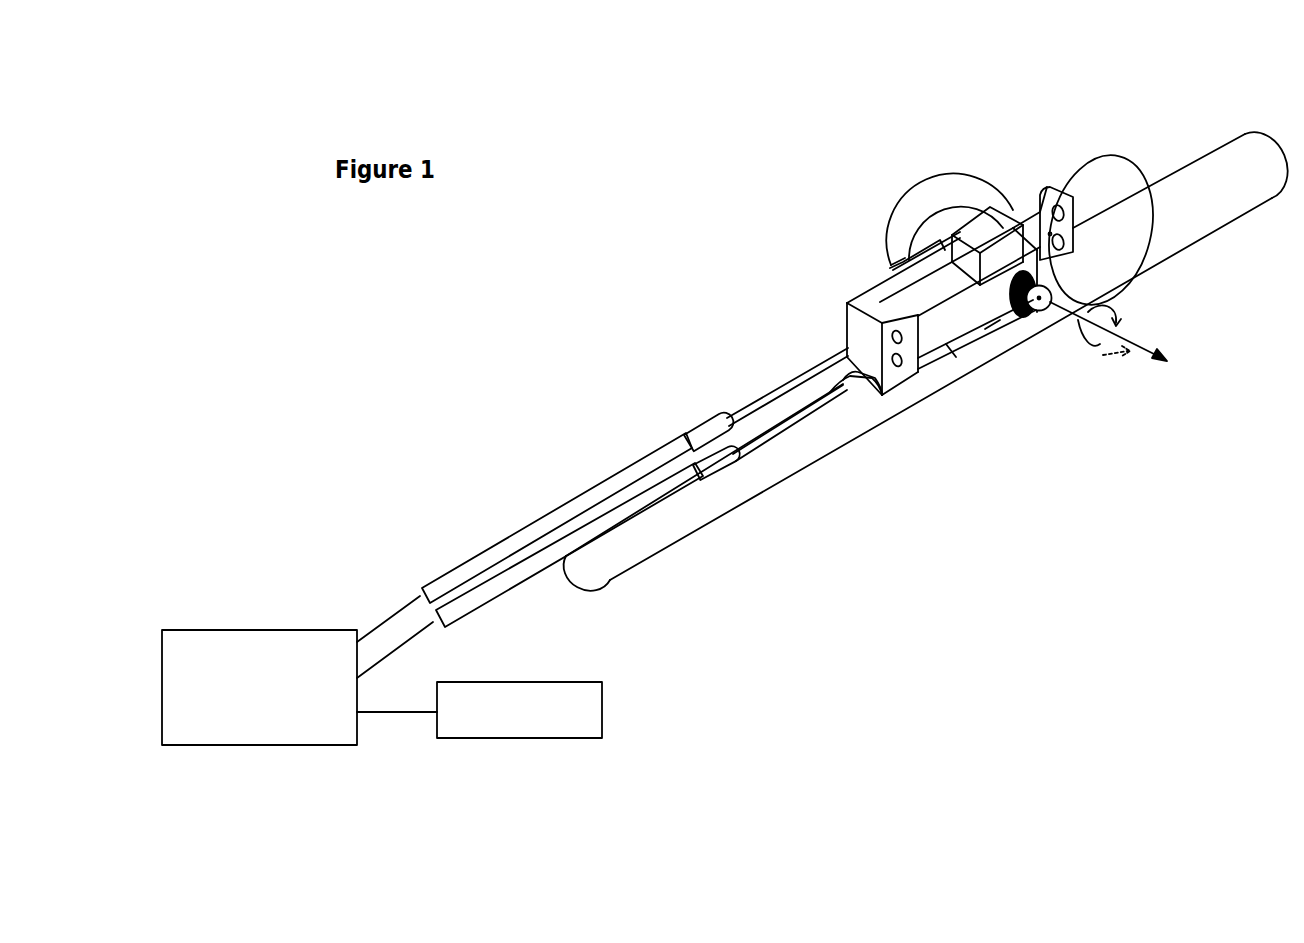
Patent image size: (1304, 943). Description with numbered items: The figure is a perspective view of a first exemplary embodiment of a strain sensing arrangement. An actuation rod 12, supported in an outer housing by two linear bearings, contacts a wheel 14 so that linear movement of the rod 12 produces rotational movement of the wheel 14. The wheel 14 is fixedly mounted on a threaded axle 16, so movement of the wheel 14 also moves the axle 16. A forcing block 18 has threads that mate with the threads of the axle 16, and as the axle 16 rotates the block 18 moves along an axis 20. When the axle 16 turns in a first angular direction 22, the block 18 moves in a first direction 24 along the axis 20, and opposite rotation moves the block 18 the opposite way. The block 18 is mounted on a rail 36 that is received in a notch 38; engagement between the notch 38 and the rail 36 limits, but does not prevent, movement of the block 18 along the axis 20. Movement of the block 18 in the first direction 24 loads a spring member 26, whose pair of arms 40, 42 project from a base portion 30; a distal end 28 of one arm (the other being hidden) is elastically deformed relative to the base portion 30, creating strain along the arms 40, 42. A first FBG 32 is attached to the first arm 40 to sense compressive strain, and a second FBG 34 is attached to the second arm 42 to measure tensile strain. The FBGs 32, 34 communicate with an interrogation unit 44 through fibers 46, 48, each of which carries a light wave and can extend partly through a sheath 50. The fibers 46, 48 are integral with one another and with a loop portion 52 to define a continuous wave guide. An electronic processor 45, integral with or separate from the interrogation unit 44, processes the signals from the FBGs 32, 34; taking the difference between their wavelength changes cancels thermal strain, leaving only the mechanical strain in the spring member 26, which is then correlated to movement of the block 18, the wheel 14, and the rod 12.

The actuation rod 12 is at (745, 490).
The wheel 14 is at (940, 197).
The threaded axle 16 is at (1050, 299).
The forcing block 18 is at (1000, 200).
The axis 20 is at (1126, 341).
The first angular direction 22 is at (1078, 336).
The first direction 24 is at (1118, 370).
The spring member 26 is at (857, 290).
The distal end 28 is at (1053, 183).
The base portion 30 is at (880, 330).
The first FBG 32 is at (893, 270).
The second FBG 34 is at (990, 358).
The rail 36 is at (890, 268).
The notch 38 is at (917, 225).
The first arm 40 is at (950, 240).
The second arm 42 is at (977, 340).
The interrogation unit 44 is at (267, 623).
The electronic processor 45 is at (602, 703).
The fiber 46 is at (880, 358).
The fiber 48 is at (846, 391).
The sheath 50 is at (693, 440).
The loop portion 52 is at (1140, 160).